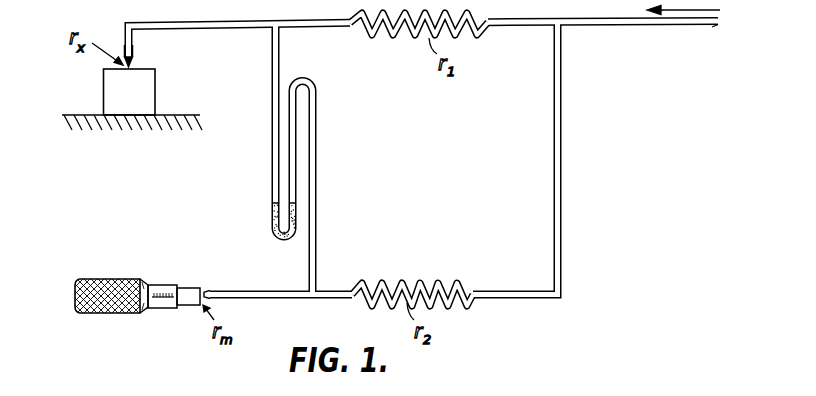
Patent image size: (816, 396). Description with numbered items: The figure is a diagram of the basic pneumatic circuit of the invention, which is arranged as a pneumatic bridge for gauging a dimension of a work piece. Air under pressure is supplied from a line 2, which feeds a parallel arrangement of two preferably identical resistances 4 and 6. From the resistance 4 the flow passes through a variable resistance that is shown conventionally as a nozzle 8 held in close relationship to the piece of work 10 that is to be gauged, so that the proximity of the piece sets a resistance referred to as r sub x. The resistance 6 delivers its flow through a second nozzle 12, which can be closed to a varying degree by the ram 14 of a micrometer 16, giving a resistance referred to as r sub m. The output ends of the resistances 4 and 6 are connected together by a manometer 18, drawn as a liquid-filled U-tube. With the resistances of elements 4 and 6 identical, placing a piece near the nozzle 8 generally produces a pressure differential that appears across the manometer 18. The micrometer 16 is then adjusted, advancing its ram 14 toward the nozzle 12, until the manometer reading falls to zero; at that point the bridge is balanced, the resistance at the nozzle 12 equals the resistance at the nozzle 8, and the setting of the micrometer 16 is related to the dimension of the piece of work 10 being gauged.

The line 2 is at (624, 22).
The resistance 4 is at (422, 13).
The resistance 6 is at (415, 283).
The nozzle 8 is at (133, 65).
The piece of work 10 is at (113, 90).
The nozzle 12 is at (208, 288).
The ram 14 is at (188, 290).
The micrometer 16 is at (142, 280).
The manometer 18 is at (272, 186).